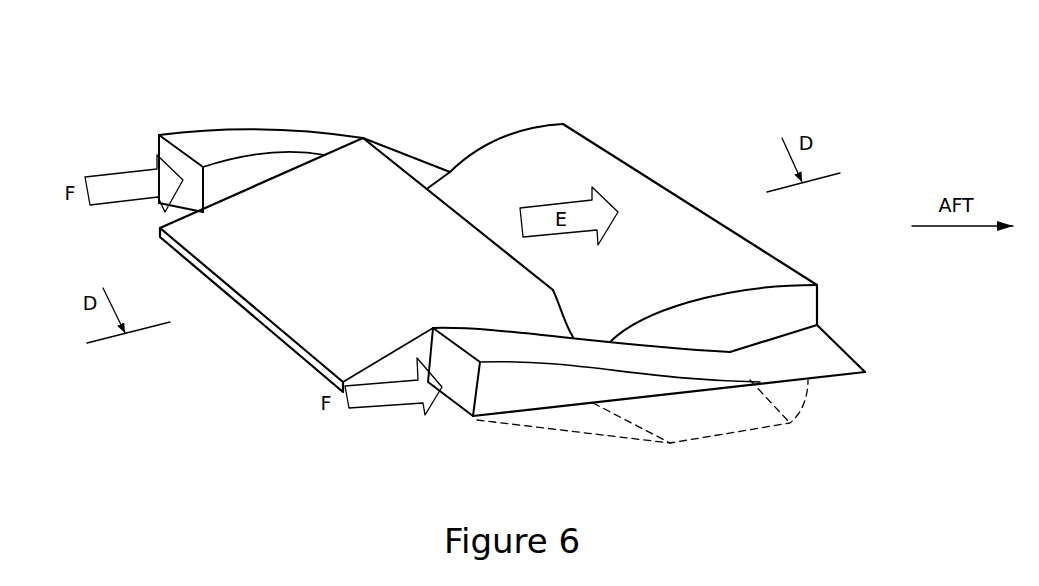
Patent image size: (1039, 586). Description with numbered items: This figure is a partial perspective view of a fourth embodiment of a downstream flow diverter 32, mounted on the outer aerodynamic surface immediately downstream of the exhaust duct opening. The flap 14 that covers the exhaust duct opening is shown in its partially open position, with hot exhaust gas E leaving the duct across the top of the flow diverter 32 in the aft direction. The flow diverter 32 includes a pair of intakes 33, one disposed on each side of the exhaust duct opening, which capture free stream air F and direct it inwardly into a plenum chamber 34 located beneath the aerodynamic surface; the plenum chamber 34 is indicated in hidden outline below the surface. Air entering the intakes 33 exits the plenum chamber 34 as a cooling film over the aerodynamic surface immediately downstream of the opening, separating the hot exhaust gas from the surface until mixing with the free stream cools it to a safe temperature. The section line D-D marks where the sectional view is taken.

The flap 14 is at (364, 172).
The downstream flow diverter 32 is at (635, 127).
The intakes 33 is at (252, 140).
The plenum chamber 34 is at (727, 423).